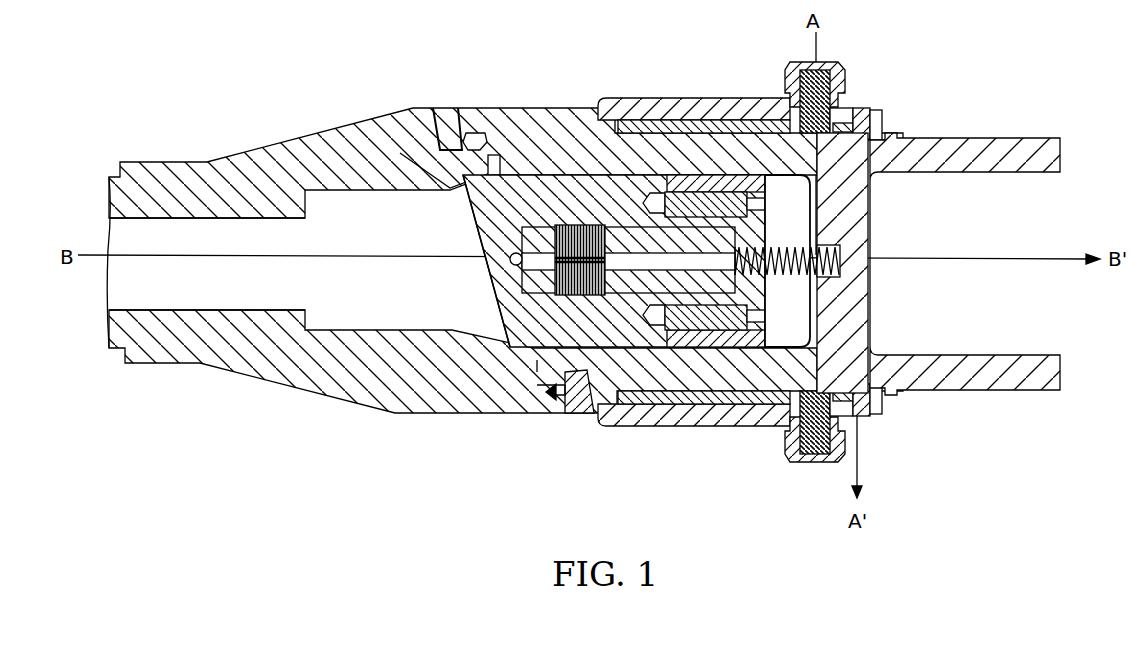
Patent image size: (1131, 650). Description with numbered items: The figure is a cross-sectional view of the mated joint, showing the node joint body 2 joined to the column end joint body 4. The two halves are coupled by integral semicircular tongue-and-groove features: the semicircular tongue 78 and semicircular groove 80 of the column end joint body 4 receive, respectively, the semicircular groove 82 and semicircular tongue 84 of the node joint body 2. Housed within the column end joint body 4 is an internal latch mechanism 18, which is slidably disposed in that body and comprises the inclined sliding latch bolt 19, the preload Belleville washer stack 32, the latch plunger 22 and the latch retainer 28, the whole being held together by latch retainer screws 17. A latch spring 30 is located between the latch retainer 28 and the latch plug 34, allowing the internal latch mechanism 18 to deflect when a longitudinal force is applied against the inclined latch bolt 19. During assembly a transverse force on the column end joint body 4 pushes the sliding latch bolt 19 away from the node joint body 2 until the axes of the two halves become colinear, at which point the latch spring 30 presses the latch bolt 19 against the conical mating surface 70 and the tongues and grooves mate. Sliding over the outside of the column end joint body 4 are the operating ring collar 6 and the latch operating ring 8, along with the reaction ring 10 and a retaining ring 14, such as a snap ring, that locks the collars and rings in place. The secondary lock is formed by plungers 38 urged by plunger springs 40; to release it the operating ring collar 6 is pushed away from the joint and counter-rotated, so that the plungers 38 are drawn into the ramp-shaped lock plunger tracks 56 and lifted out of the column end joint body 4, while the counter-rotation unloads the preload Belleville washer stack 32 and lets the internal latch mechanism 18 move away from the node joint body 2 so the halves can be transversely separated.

The node joint body 2 is at (178, 162).
The column end joint body 4 is at (518, 108).
The operating ring collar 6 is at (652, 98).
The latch operating ring 8 is at (698, 120).
The reaction ring 10 is at (882, 112).
The retaining ring 14 is at (886, 116).
The latch retainer screws 17 is at (703, 347).
The internal latch mechanism 18 is at (480, 273).
The latch bolt 19 is at (510, 315).
The latch plunger 22 is at (632, 295).
The latch retainer 28 is at (725, 347).
The latch spring 30 is at (792, 276).
The preload Belleville washer stack 32 is at (580, 225).
The latch plug 34 is at (870, 298).
The plungers 38 is at (852, 109).
The plunger springs 40 is at (847, 83).
The lock plunger tracks 56 is at (905, 141).
The conical mating surface 70 is at (400, 152).
The semicircular tongue 78 is at (538, 385).
The semicircular groove 80 is at (473, 122).
The semicircular groove 82 is at (556, 412).
The semicircular tongue 84 is at (438, 108).